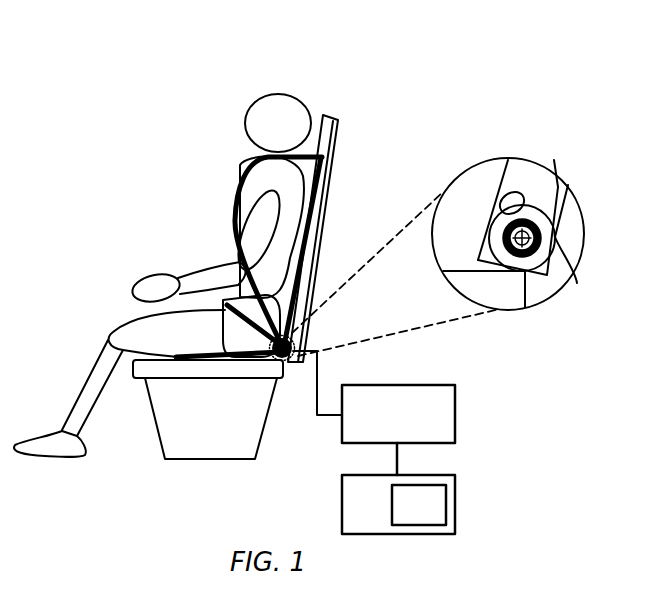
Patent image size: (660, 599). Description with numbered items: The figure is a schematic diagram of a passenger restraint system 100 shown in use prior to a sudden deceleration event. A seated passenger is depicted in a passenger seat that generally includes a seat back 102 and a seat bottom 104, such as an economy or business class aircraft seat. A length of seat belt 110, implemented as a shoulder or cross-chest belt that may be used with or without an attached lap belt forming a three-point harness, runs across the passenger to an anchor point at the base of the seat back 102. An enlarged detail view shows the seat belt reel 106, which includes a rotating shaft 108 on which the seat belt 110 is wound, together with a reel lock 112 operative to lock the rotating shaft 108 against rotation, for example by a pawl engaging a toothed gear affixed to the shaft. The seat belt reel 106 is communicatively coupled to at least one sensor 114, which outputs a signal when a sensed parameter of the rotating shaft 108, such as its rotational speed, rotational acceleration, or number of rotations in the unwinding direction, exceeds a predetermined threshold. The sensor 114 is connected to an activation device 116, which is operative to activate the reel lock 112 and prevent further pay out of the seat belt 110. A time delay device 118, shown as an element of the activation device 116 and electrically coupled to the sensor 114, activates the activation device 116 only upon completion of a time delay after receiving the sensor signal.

The passenger restraint system 100 is at (147, 80).
The seat back 102 is at (341, 132).
The seat bottom 104 is at (133, 362).
The seat belt reel 106 is at (562, 237).
The rotating shaft 108 is at (578, 282).
The seat belt 110 is at (232, 188).
The reel lock 112 is at (502, 203).
The sensor 114 is at (398, 430).
The activation device 116 is at (398, 504).
The time delay device 118 is at (419, 505).